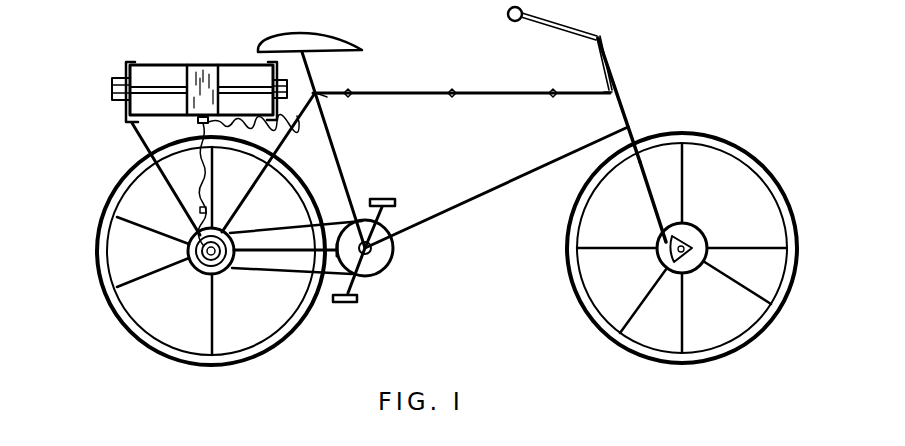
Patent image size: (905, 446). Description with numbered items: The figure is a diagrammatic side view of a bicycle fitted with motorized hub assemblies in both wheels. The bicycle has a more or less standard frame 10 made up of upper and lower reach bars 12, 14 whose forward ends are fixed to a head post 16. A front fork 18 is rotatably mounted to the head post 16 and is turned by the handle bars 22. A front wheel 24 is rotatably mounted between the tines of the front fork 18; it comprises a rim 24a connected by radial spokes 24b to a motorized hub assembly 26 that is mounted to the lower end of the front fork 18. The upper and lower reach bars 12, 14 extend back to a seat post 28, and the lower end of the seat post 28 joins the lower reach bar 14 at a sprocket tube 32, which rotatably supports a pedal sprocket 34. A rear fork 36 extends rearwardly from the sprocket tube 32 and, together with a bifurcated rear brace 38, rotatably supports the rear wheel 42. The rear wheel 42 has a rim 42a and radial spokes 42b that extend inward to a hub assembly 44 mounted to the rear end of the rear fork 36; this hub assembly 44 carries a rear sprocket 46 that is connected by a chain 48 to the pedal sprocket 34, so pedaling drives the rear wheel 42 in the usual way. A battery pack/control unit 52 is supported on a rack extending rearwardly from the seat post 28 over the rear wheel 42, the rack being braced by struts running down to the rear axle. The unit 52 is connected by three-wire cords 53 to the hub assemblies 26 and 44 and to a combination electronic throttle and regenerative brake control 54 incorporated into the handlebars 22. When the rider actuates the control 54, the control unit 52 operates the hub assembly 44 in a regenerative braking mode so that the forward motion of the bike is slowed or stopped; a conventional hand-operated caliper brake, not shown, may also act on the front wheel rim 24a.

The frame 10 is at (613, 70).
The upper reach bar 12 is at (490, 90).
The lower reach bar 14 is at (480, 197).
The head post 16 is at (623, 102).
The front fork 18 is at (653, 202).
The handle bars 22 is at (567, 31).
The front wheel 24 is at (772, 162).
The rim 24a is at (847, 198).
The radial spokes 24b is at (762, 218).
The motorized hub assembly 26 is at (706, 253).
The seat post 28 is at (345, 172).
The sprocket tube 32 is at (370, 277).
The pedal sprocket 34 is at (387, 257).
The rear fork 36 is at (280, 252).
The bifurcated rear brace 38 is at (287, 133).
The rear wheel 42 is at (98, 205).
The rim 42a is at (97, 239).
The radial spokes 42b is at (167, 260).
The hub assembly 44 is at (182, 237).
The rear sprocket 46 is at (213, 276).
The chain 48 is at (267, 230).
The battery pack/control unit 52 is at (177, 72).
The 3-wire cords 53 is at (330, 100).
The combination electronic throttle regenerative brake control 54 is at (526, 11).